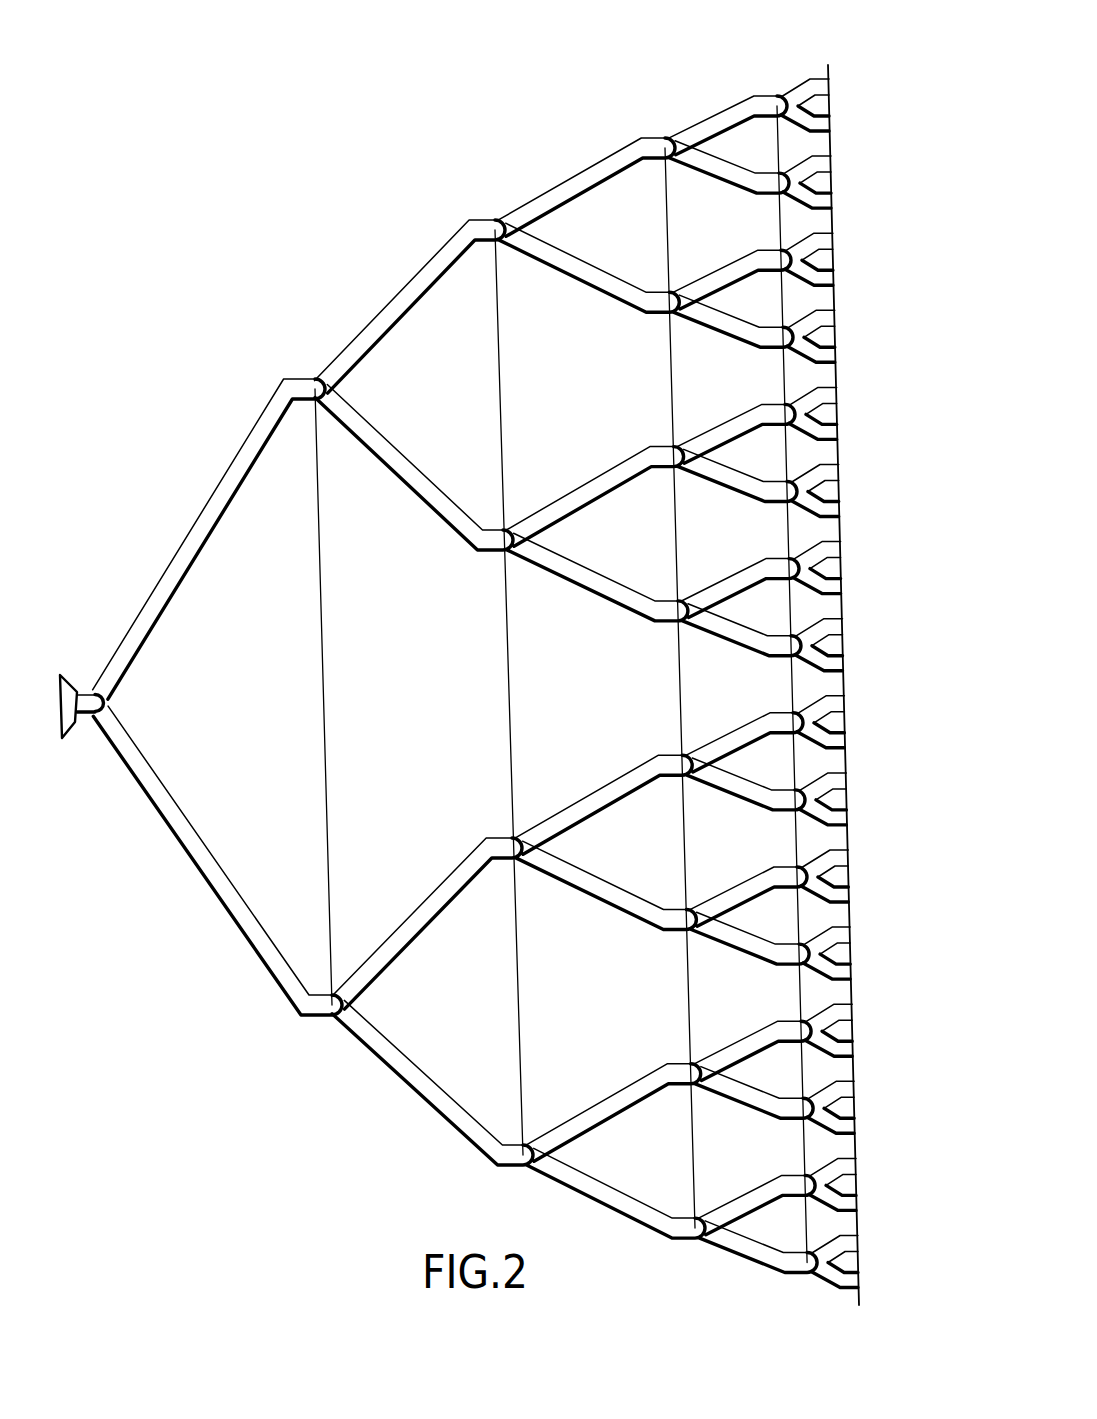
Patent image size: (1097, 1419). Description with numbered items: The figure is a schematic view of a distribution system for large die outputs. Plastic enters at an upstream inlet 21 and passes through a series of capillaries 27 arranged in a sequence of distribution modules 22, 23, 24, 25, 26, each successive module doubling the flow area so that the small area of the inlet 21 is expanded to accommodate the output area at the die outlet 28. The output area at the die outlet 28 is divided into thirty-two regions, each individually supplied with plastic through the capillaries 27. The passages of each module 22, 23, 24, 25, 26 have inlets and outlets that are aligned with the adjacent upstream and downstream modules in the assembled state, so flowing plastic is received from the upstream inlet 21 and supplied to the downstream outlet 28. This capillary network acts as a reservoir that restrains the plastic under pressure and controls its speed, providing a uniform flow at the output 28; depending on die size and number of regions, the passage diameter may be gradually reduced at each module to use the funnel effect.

The inlet 21 is at (69, 676).
The distribution module 22 is at (198, 502).
The distribution module 23 is at (355, 318).
The distribution module 24 is at (563, 163).
The distribution module 25 is at (700, 105).
The distribution module 26 is at (785, 75).
The capillaries 27 is at (195, 862).
The die outlet 28 is at (843, 645).